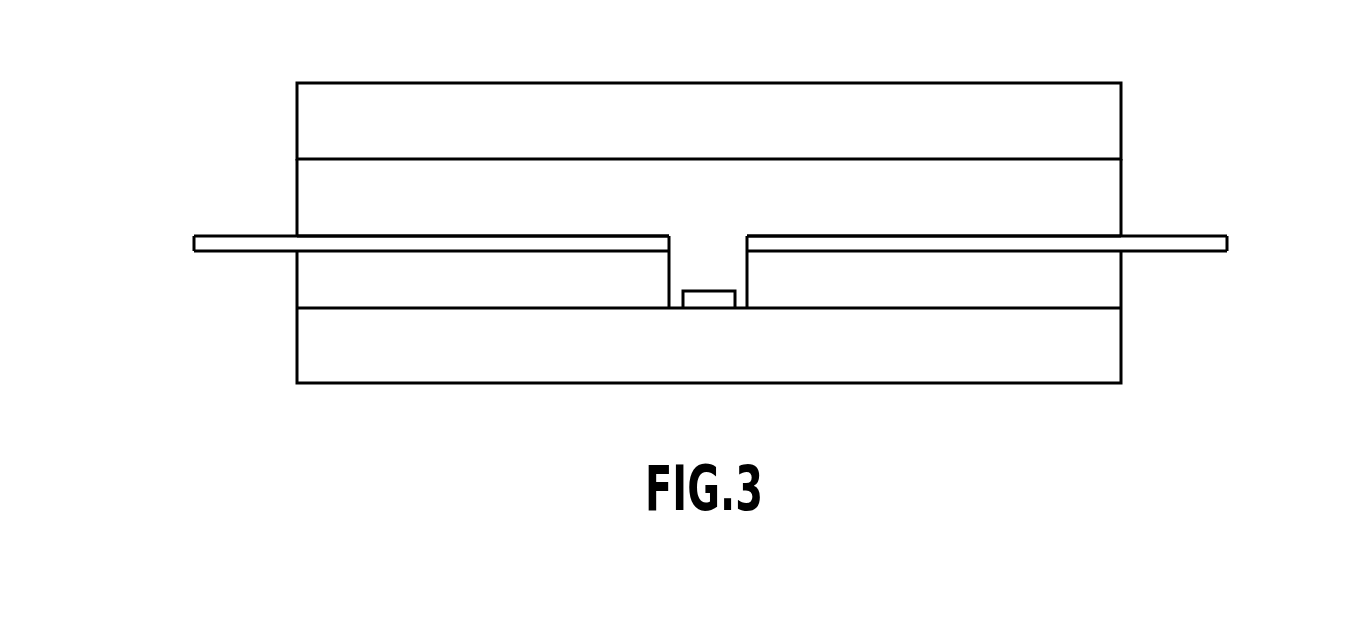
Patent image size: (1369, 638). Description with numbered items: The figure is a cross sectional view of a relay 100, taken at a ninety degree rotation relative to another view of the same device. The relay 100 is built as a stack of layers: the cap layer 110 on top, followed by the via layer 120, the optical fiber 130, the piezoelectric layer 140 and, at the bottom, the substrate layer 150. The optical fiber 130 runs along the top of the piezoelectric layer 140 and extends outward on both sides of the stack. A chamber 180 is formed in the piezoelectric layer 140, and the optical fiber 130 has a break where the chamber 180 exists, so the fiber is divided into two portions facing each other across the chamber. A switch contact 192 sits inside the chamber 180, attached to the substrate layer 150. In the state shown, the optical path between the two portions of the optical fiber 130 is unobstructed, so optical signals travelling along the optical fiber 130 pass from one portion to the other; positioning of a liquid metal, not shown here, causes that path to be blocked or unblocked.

The relay 100 is at (246, 430).
The cap layer 110 is at (297, 131).
The via layer 120 is at (1122, 192).
The optical fiber 130 is at (194, 244).
The piezoelectric layer 140 is at (1122, 285).
The substrate layer 150 is at (1122, 358).
The chamber 180 is at (710, 255).
The switch contact 192 is at (710, 298).